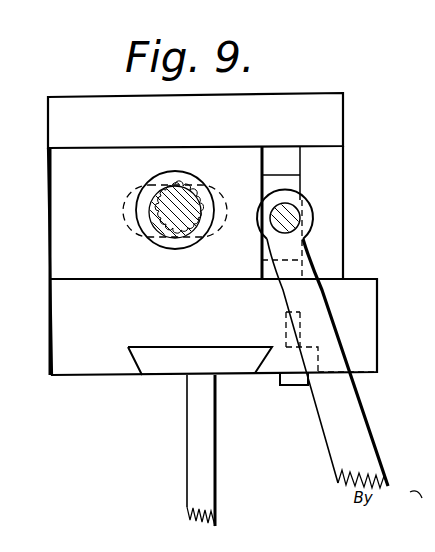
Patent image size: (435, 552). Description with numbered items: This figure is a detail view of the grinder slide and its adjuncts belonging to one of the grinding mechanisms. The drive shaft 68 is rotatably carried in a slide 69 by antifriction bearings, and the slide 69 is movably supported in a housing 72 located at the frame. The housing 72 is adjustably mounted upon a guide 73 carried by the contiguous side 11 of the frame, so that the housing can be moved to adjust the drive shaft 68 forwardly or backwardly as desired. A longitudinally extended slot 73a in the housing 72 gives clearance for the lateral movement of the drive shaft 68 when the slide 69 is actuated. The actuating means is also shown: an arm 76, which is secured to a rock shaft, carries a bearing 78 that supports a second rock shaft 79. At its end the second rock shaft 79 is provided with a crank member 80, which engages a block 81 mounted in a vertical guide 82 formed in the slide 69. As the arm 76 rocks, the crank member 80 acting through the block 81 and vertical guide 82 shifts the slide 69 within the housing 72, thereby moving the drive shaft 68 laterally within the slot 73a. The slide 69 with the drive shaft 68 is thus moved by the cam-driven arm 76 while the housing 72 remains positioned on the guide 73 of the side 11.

The housing 72 is at (195, 120).
The front slide 69 is at (212, 260).
The drive shaft 68 is at (190, 199).
The longitudinally extended slot 73a is at (125, 222).
The vertical guide 82 is at (282, 160).
The block 81 is at (293, 182).
The crank member 80 is at (298, 202).
The second rock shaft 79 is at (302, 220).
The bearing 78 is at (296, 242).
The arm 76 is at (352, 407).
The guide 73 is at (223, 364).
The side 11 is at (200, 477).